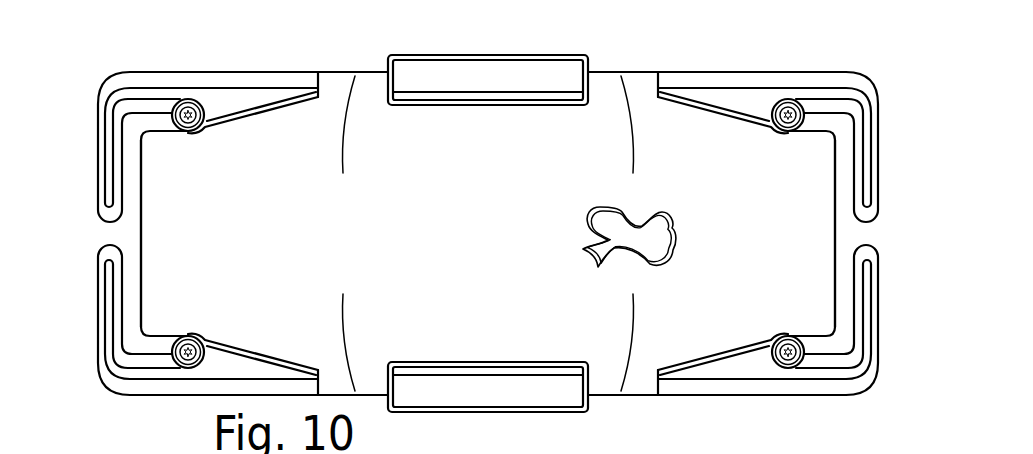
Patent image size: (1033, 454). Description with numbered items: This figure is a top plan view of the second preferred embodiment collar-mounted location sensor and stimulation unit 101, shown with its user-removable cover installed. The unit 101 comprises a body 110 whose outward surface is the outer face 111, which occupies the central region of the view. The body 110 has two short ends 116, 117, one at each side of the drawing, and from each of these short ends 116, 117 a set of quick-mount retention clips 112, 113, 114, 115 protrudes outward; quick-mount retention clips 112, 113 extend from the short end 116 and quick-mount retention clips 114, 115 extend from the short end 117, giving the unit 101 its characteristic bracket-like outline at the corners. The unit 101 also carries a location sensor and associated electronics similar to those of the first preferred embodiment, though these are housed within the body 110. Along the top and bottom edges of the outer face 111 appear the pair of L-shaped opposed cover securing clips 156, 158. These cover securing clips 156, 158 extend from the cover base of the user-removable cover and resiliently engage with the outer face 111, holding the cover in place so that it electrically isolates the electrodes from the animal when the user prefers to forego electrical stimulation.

The collar-mounted location sensor and stimulation unit 101 is at (168, 34).
The body 110 is at (618, 58).
The outer face 111 is at (407, 246).
The quick-mount retention clip 112 is at (878, 132).
The quick-mount retention clip 113 is at (878, 328).
The quick-mount retention clip 114 is at (97, 140).
The quick-mount retention clip 115 is at (97, 317).
The short end 116 is at (838, 242).
The short end 117 is at (138, 237).
The cover securing clip 156 is at (496, 68).
The cover securing clip 158 is at (509, 404).